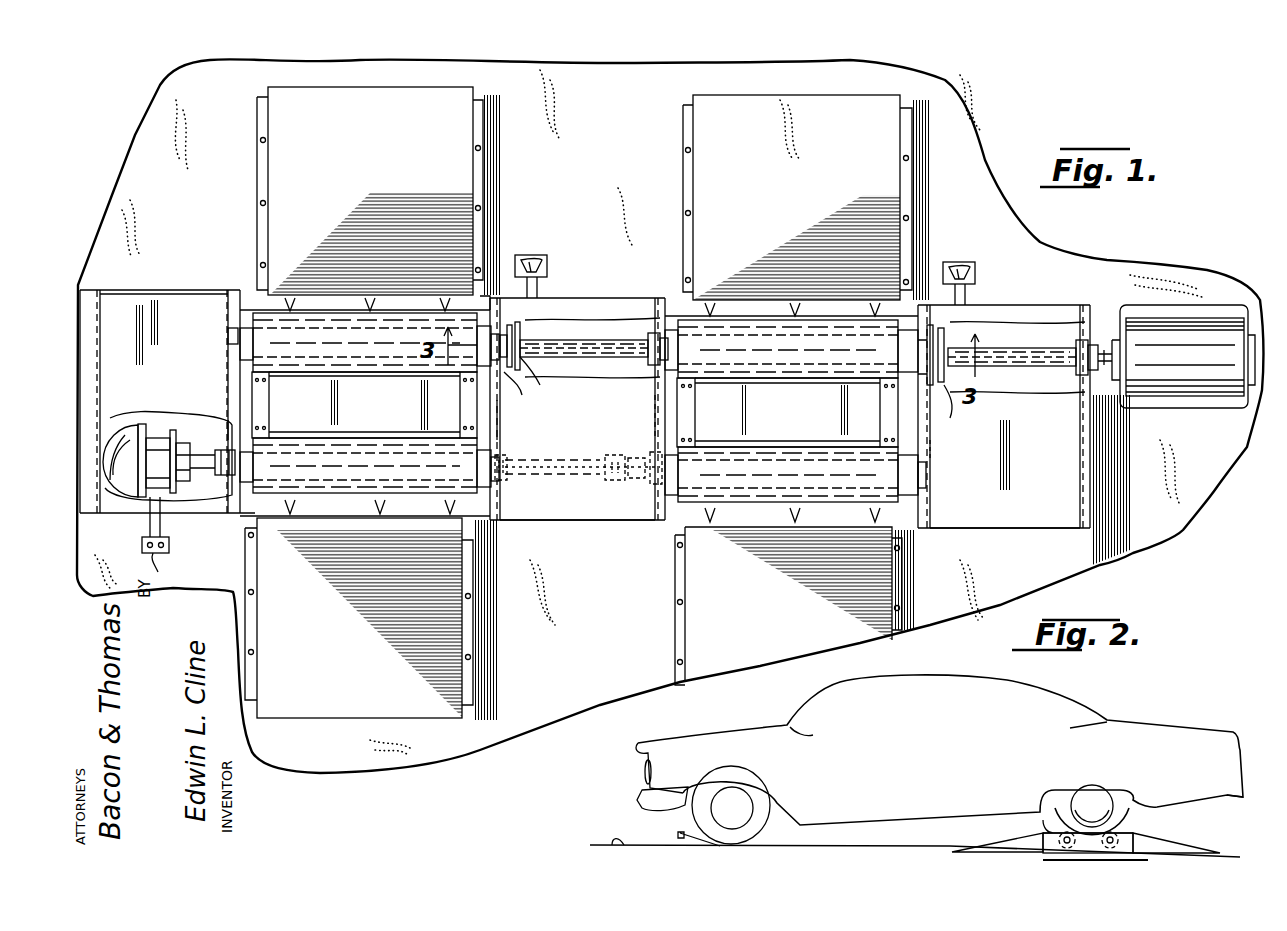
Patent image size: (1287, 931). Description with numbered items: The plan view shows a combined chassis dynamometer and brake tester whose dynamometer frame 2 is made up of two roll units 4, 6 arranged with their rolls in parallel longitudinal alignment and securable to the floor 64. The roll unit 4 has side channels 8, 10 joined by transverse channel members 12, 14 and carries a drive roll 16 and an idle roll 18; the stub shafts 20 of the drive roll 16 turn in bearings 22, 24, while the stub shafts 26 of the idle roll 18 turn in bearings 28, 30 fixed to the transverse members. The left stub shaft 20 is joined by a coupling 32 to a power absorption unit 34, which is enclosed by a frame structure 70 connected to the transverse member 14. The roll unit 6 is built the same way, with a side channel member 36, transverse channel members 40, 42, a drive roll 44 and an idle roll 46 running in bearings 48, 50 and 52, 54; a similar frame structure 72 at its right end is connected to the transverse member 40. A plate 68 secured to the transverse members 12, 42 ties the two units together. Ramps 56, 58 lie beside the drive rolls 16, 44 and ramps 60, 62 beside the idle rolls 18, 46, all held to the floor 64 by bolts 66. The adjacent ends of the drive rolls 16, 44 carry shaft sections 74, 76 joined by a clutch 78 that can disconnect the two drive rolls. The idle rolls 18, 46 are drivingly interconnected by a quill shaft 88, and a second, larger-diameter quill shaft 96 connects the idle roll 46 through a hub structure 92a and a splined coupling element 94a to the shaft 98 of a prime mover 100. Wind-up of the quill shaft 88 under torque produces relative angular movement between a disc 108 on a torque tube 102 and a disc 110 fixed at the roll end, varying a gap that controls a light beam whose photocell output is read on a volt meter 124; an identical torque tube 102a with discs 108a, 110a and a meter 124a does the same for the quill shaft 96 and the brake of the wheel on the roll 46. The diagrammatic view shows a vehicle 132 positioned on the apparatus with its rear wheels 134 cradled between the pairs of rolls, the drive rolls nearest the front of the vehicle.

In FIG. 1, the dynamometer frame 2 is at (575, 543).
In FIG. 2, the dynamometer frame 2 is at (1024, 823).
In FIG. 1, the roll unit 4 is at (316, 513).
In FIG. 1, the roll unit 6 is at (744, 514).
In FIG. 1, the side channel 8 is at (490, 520).
In FIG. 1, the side channel 10 is at (472, 300).
In FIG. 1, the transverse channel member 12 is at (500, 436).
In FIG. 1, the transverse channel member 14 is at (227, 375).
In FIG. 1, the drive roll 16 is at (374, 447).
In FIG. 1, the idle roll 18 is at (312, 366).
In FIG. 1, the stub shaft 20 is at (255, 455).
In FIG. 1, the bearing 22 is at (503, 480).
In FIG. 1, the bearing 24 is at (232, 490).
In FIG. 1, the stub shaft 26 is at (226, 335).
In FIG. 1, the bearing 28 is at (500, 328).
In FIG. 1, the bearing 30 is at (238, 302).
In FIG. 1, the coupling 32 is at (222, 448).
In FIG. 1, the power absorption unit 34 is at (122, 490).
In FIG. 1, the side channel member 36 is at (915, 528).
In FIG. 1, the transverse channel member 40 is at (930, 448).
In FIG. 1, the transverse channel member 42 is at (655, 422).
In FIG. 1, the drive roll 44 is at (762, 452).
In FIG. 2, the drive roll 44 is at (1040, 812).
In FIG. 1, the idle roll 46 is at (792, 370).
In FIG. 2, the idle roll 46 is at (1112, 838).
In FIG. 1, the bearing 48 is at (656, 485).
In FIG. 1, the bearing 50 is at (928, 492).
In FIG. 1, the bearing 52 is at (788, 349).
In FIG. 1, the bearing 54 is at (898, 338).
In FIG. 1, the ramp 56 is at (316, 710).
In FIG. 1, the ramp 58 is at (700, 635).
In FIG. 2, the ramp 58 is at (1000, 840).
In FIG. 1, the ramp 60 is at (425, 102).
In FIG. 1, the ramp 62 is at (842, 106).
In FIG. 2, the ramp 62 is at (1156, 850).
In FIG. 1, the floor 64 is at (1184, 517).
In FIG. 2, the floor 64 is at (915, 837).
In FIG. 1, the bolt 66 is at (258, 203).
In FIG. 1, the plate 68 is at (530, 520).
In FIG. 1, the frame structure 70 is at (130, 300).
In FIG. 1, the frame structure 72 is at (1018, 312).
In FIG. 1, the shaft section 74 is at (557, 467).
In FIG. 1, the shaft section 76 is at (630, 457).
In FIG. 1, the clutch 78 is at (615, 482).
In FIG. 1, the quill shaft 88 is at (575, 326).
In FIG. 1, the hub structure 92a is at (1068, 380).
In FIG. 1, the splined coupling element 94a is at (1070, 330).
In FIG. 1, the quill shaft 96 is at (998, 360).
In FIG. 1, the shaft 98 is at (1118, 358).
In FIG. 1, the prime mover 100 is at (1140, 408).
In FIG. 1, the torque tube 102 is at (595, 355).
In FIG. 1, the torque tube 102a is at (1022, 377).
In FIG. 1, the disc 108 is at (551, 340).
In FIG. 1, the disc 108a is at (945, 340).
In FIG. 1, the disc 110 is at (508, 372).
In FIG. 1, the disc 110a is at (964, 412).
In FIG. 1, the volt meter 124 is at (530, 254).
In FIG. 1, the meter 124a is at (958, 261).
In FIG. 2, the vehicle 132 is at (1168, 734).
In FIG. 2, the rear wheel 134 is at (1122, 795).